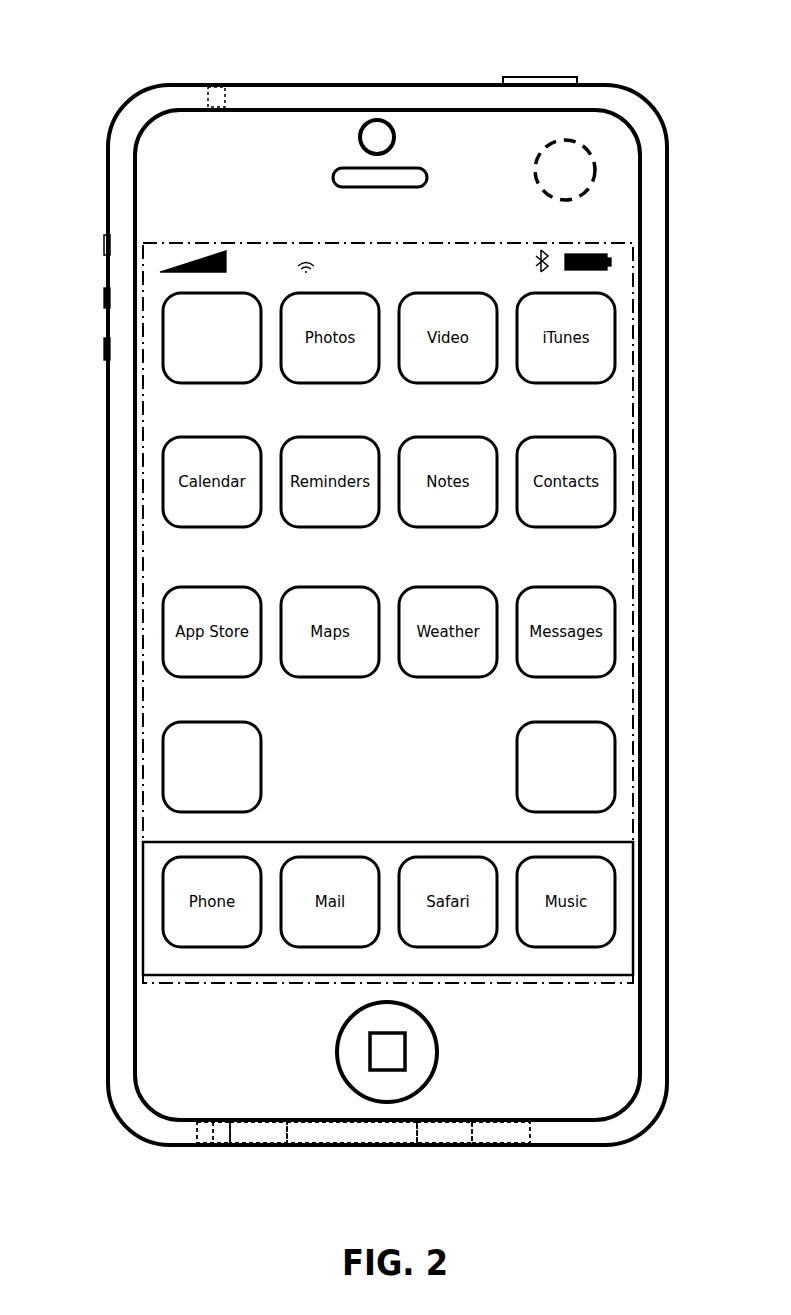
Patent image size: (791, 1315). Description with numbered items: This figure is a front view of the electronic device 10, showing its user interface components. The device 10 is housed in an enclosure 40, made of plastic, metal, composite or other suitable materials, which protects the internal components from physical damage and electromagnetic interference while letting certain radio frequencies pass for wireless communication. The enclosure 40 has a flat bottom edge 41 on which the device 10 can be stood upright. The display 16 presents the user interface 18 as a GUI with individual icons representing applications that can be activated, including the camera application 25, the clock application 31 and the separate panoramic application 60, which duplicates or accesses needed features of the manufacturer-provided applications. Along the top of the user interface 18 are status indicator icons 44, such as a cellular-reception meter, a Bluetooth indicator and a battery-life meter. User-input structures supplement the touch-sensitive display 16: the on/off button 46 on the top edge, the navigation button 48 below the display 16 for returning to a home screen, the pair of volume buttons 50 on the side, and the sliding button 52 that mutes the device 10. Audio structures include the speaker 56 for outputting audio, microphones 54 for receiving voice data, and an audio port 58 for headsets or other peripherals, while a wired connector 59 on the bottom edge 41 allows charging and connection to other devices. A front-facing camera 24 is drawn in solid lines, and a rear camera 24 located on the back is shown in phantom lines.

The electronic device 10 is at (242, 30).
The enclosure 40 is at (138, 94).
The on/off button 46 is at (540, 76).
The camera 24 is at (395, 133).
The audio structure 56 is at (355, 187).
The user interface 18 is at (613, 290).
The display 16 is at (614, 402).
The status indicator icons 44 is at (202, 255).
The sliding button 52 is at (103, 244).
The volume buttons 50 is at (103, 300).
The camera application 25 is at (212, 338).
The clock application 31 is at (212, 767).
The panoramic application 60 is at (566, 767).
The navigation button 48 is at (440, 1050).
The audio port 58 is at (200, 1143).
The audio structures 54 is at (288, 1143).
The flat bottom edge 41 is at (345, 1145).
The wired connector 59 is at (418, 1143).